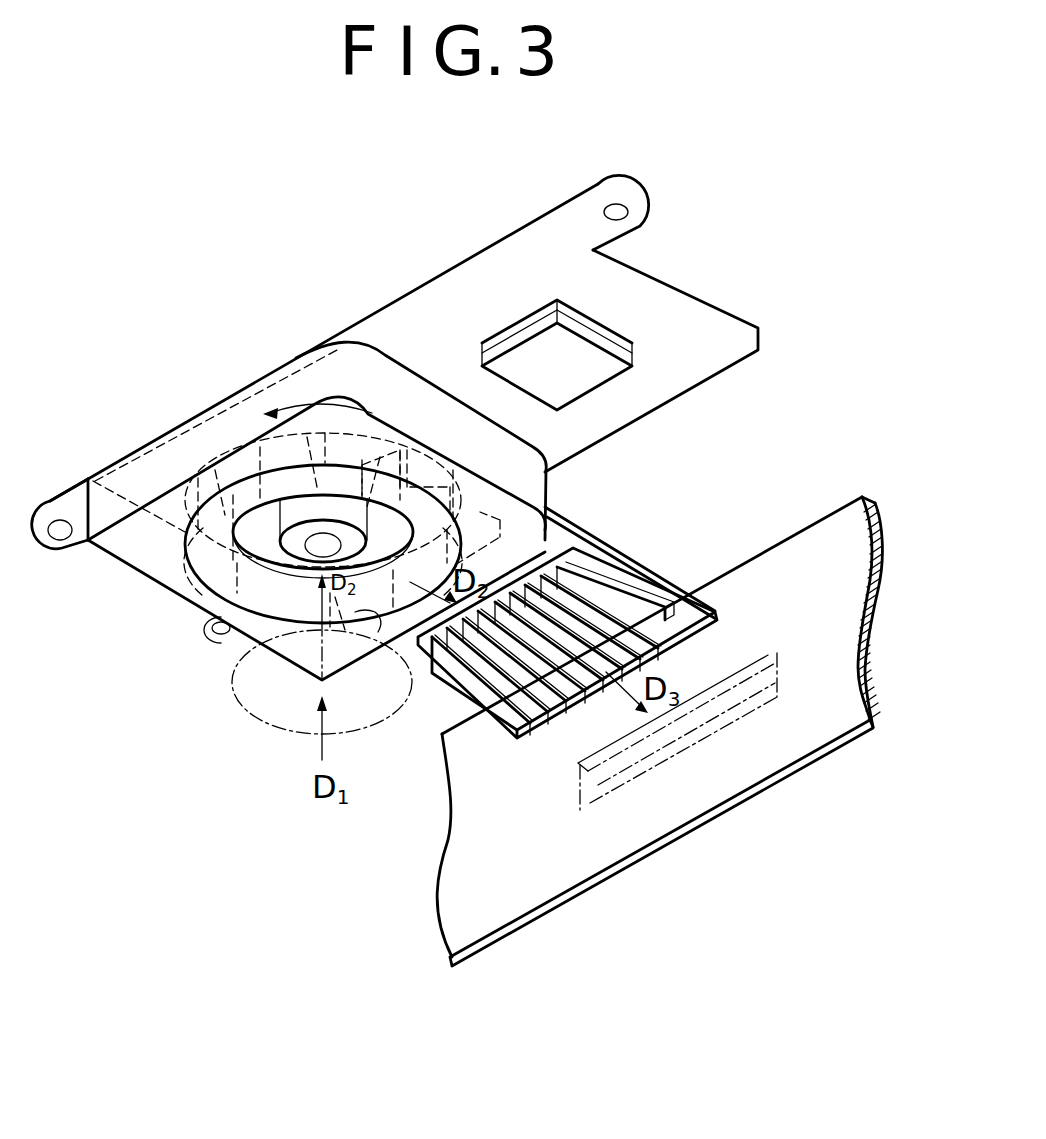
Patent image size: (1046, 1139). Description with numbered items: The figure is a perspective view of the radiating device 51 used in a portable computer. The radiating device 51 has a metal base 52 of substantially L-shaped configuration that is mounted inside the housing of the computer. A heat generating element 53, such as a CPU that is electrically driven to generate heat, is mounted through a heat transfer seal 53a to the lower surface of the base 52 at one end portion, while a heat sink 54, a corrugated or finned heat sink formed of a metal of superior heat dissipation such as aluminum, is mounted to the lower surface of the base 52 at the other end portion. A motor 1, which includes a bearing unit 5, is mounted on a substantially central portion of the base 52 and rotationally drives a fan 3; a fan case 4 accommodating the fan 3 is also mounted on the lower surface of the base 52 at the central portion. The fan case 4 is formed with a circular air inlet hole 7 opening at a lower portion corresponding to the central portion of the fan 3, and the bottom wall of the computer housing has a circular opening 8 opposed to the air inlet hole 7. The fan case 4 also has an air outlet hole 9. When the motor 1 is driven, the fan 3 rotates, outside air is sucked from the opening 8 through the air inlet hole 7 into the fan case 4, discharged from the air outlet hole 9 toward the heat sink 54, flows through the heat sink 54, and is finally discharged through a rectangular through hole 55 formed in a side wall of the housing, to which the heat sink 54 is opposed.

The motor 1 is at (227, 573).
The fan 3 is at (208, 490).
The fan case 4 is at (141, 478).
The bearing unit 5 is at (287, 518).
The air inlet hole 7 is at (288, 576).
The circular opening 8 is at (278, 727).
The air outlet hole 9 is at (362, 628).
The radiating device 51 is at (252, 366).
The metal base 52 is at (721, 312).
The heat generating element 53 is at (627, 385).
The heat transfer seal 53a is at (632, 347).
The heat sink 54 is at (620, 587).
The rectangular through hole 55 is at (777, 662).